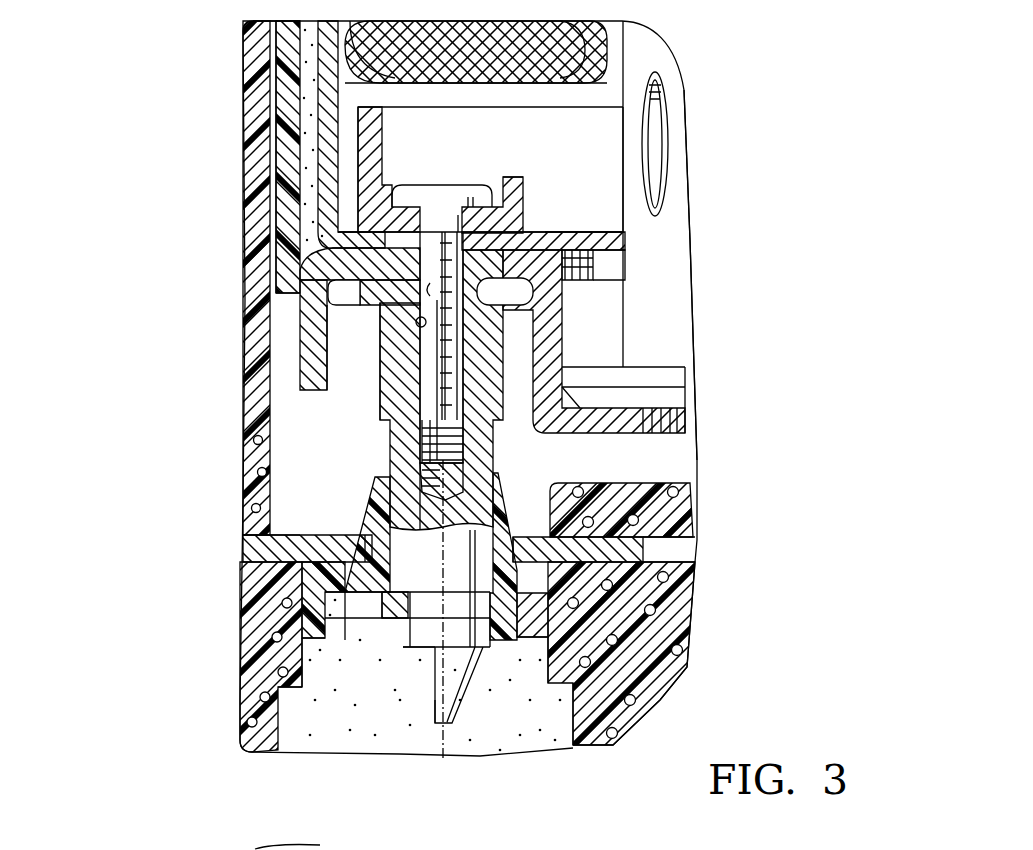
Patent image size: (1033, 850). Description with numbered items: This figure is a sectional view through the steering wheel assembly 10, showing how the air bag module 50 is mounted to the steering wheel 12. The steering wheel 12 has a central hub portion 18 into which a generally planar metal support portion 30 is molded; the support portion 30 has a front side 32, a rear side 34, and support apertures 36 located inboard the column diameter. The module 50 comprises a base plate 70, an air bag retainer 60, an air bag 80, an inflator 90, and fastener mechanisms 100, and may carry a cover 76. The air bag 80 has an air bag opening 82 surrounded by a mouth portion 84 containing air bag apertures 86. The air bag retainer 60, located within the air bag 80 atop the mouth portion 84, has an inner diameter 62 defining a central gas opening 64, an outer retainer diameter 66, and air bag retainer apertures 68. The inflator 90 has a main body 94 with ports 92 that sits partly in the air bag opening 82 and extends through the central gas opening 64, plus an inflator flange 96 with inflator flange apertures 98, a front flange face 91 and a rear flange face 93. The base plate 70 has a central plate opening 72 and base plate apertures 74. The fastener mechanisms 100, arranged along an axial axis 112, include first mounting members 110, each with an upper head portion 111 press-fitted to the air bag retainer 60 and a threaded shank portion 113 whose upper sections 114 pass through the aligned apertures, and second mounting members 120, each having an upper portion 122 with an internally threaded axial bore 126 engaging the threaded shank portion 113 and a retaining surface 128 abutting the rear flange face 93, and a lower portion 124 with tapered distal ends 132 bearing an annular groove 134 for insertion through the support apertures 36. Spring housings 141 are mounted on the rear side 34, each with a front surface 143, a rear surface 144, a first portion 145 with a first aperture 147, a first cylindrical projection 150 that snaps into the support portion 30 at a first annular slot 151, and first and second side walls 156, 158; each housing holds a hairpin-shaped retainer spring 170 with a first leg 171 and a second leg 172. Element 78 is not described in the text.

The steering wheel assembly 10 is at (106, 173).
The steering wheel 12 is at (225, 672).
The central hub portion 18 is at (247, 713).
The support plate portion 30 is at (230, 548).
The front side 32 is at (303, 532).
The rear side 34 is at (330, 567).
The support apertures 36 is at (363, 628).
The air bag module 50 is at (300, 97).
The air bag retainer 60 is at (350, 152).
The inner diameter 62 is at (527, 190).
The central gas opening 64 is at (590, 187).
The outer retainer diameter 66 is at (358, 125).
The air bag retainer apertures 68 is at (417, 213).
The base plate 70 is at (320, 250).
The central circular plate opening 72 is at (560, 257).
The base plate apertures 74 is at (437, 280).
The cover 76 is at (300, 62).
The wall end 78 is at (302, 288).
The air bag 80 is at (305, 37).
The air bag opening 82 is at (545, 236).
The mouth portion 84 is at (655, 210).
The air bag apertures 86 is at (433, 280).
The inflator 90 is at (696, 238).
The front flange face 91 is at (500, 272).
The ports 92 is at (660, 86).
The rear flange face 93 is at (490, 318).
The main body 94 is at (647, 50).
The inflator flange 96 is at (354, 305).
The inflator flange apertures 98 is at (460, 217).
The fastener mechanisms 100 is at (365, 376).
The first mounting members 110 is at (410, 355).
The upper head portion 111 is at (478, 182).
The axial axis 112 is at (482, 760).
The threaded shank portion 113 is at (447, 380).
The upper sections 114 is at (425, 318).
The second mounting members 120 is at (375, 437).
The upper portion 122 is at (560, 343).
The lower portion 124 is at (480, 463).
The internally threaded axial bore 126 is at (418, 327).
The retaining surface 128 is at (395, 283).
The tapered distal ends 132 is at (423, 662).
The annular groove 134 is at (424, 700).
The spring housings 141 is at (330, 585).
The front surface 143 is at (365, 622).
The rear surface 144 is at (335, 622).
The first portion 145 is at (560, 650).
The first aperture 147 is at (560, 580).
The first cylindrical projection 150 is at (695, 500).
The first annular slot 151 is at (510, 553).
The first side wall 156 is at (560, 612).
The second side wall 158 is at (335, 602).
The retainer spring 170 is at (500, 633).
The first leg 171 is at (524, 640).
The second leg 172 is at (417, 670).